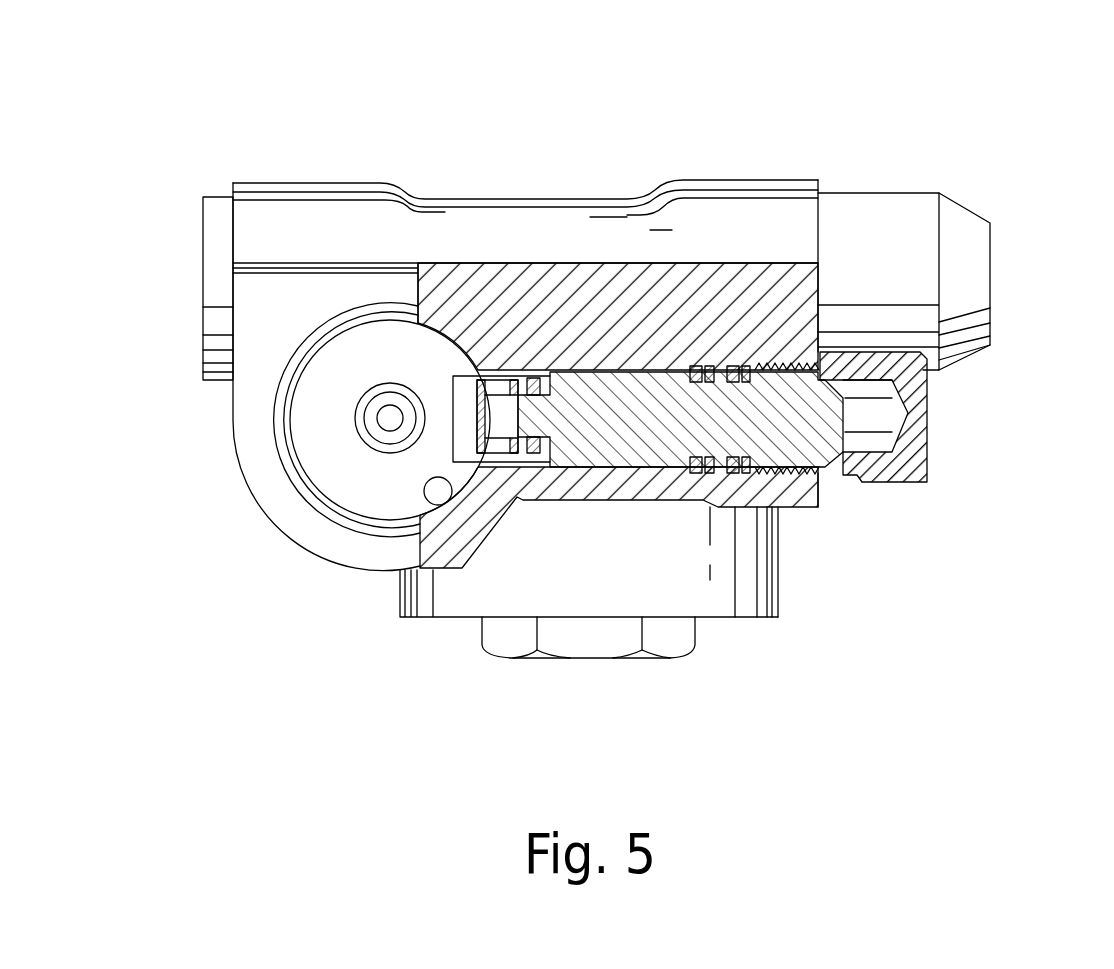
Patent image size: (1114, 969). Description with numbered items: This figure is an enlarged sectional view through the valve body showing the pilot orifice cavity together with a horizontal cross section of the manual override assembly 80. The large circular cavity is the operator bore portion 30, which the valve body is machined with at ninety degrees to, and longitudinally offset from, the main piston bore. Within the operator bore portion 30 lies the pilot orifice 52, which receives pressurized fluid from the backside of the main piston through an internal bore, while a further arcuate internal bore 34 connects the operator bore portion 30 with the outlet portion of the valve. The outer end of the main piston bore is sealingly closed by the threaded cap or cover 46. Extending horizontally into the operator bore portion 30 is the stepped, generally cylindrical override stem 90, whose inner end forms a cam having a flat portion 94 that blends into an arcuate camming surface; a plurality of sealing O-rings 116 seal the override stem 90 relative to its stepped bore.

The operator bore portion 30 is at (328, 473).
The arcuate internal bore 34 is at (433, 488).
The threaded cap or cover 46 is at (585, 632).
The pilot orifice 52 is at (388, 415).
The manual override assembly 80 is at (943, 463).
The override stem 90 is at (840, 453).
The flat portion 94 is at (500, 395).
The sealing O-rings 116 is at (530, 372).